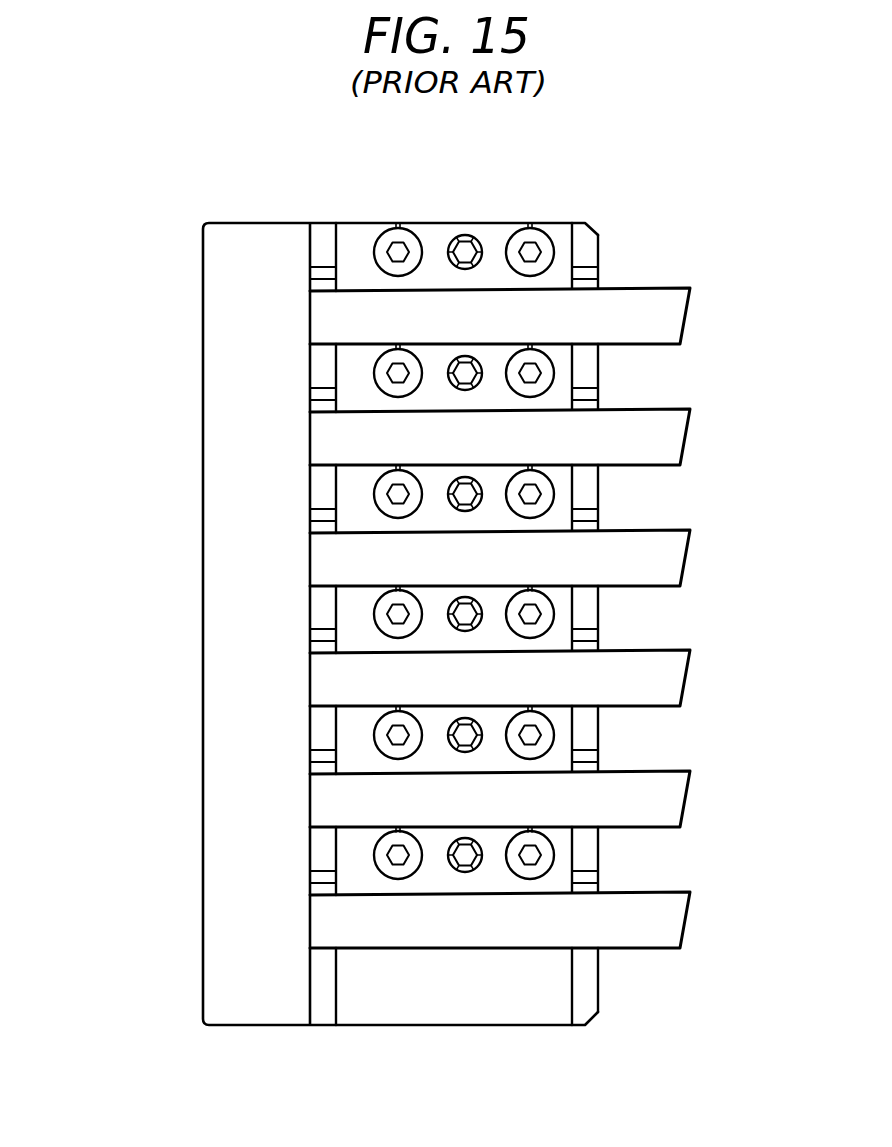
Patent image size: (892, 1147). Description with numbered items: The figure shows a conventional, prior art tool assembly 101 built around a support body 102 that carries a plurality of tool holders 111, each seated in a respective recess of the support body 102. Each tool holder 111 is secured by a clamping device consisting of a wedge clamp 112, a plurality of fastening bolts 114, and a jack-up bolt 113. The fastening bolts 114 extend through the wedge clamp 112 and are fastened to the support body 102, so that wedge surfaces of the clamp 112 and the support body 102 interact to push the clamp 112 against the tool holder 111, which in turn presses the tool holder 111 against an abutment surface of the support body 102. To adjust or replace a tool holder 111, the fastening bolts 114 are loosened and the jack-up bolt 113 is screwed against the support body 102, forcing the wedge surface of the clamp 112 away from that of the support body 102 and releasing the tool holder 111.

The tool assembly 101 is at (195, 448).
The support body 102 is at (224, 568).
The tool holder 111 is at (650, 314).
The wedge clamp 112 is at (355, 271).
The jack-up bolt 113 is at (466, 250).
The fastening bolt 114 is at (400, 248).